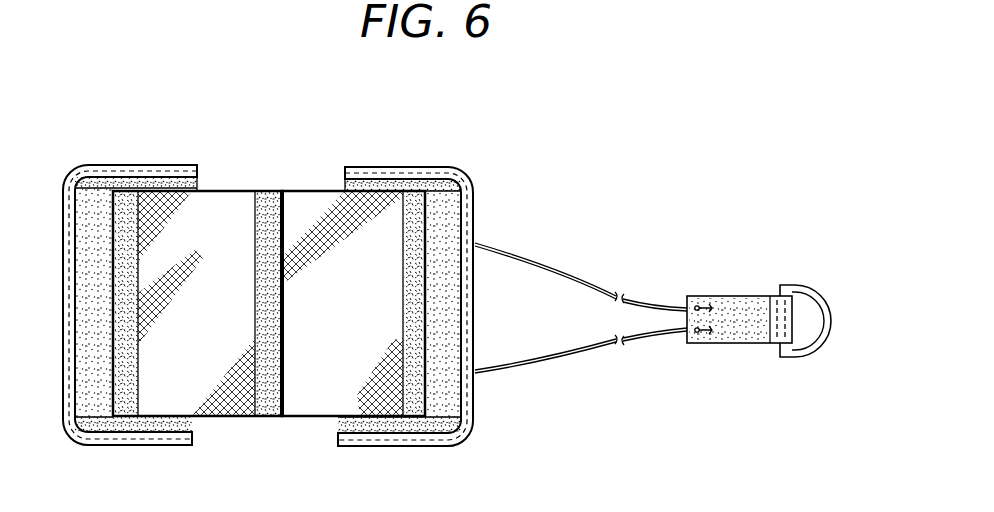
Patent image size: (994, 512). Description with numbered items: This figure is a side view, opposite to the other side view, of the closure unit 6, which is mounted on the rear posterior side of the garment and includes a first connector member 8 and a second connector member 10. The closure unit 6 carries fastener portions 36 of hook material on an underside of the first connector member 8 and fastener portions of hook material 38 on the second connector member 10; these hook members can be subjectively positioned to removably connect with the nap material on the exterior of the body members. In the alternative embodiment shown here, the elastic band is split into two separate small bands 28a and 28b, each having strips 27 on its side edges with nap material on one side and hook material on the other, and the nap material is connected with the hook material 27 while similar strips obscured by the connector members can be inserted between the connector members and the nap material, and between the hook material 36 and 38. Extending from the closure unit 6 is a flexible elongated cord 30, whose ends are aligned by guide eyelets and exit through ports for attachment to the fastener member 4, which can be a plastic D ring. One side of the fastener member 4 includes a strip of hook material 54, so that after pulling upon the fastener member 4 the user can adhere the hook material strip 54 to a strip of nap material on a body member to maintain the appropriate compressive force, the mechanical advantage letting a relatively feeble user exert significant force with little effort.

The fastener member 4 is at (798, 353).
The closure unit 6 is at (408, 150).
The first connector member 8 is at (159, 152).
The second connector member 10 is at (470, 187).
The hook material strip 27 is at (283, 191).
The small elastic band 28a is at (226, 191).
The small elastic band 28b is at (302, 191).
The flexible elongated cord 30 is at (540, 362).
The fastener portions of hook material 36 is at (102, 388).
The fastener portions of hook material 38 is at (423, 420).
The hook material strip 54 is at (737, 335).